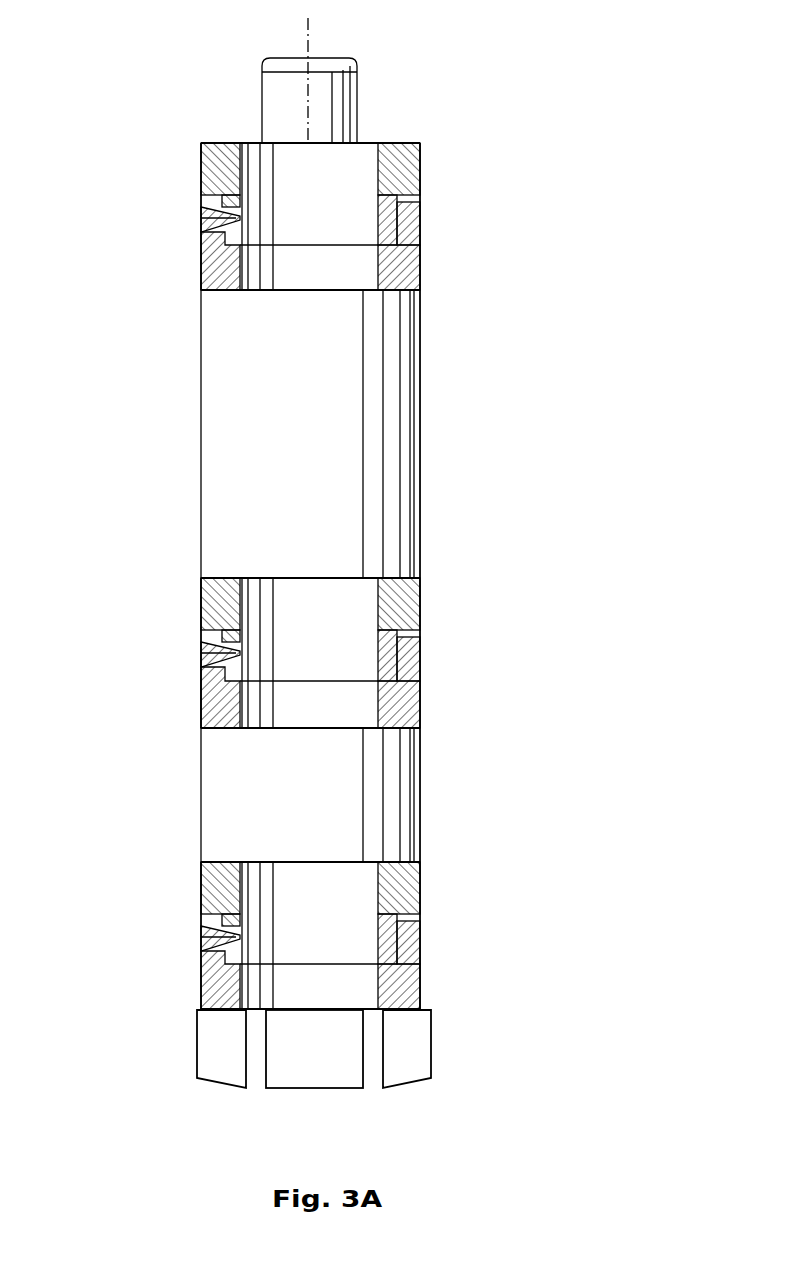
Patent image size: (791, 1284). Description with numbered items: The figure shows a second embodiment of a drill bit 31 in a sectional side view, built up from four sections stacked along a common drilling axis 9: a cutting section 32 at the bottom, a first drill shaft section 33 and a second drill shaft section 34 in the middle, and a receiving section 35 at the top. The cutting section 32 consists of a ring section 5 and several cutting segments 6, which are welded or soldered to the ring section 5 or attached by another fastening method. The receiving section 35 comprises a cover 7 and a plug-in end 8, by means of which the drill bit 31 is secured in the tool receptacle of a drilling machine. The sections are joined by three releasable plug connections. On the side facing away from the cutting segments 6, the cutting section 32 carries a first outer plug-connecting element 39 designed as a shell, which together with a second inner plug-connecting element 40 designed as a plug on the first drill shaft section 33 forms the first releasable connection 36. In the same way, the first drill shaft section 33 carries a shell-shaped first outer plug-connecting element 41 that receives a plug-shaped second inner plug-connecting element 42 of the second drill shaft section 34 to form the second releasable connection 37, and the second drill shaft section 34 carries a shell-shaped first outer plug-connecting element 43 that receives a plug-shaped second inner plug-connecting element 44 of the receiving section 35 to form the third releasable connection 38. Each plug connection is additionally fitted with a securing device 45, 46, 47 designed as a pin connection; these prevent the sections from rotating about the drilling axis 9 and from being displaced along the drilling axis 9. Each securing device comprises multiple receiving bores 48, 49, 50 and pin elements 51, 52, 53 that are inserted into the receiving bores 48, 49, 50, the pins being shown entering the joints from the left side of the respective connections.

The ring section 5 is at (410, 982).
The cutting segments 6 is at (221, 1063).
The cover 7 is at (410, 158).
The plug-in end 8 is at (285, 103).
The drilling axis 9 is at (305, 45).
The drill bit 31 is at (411, 100).
The cutting section 32 is at (560, 968).
The first drill shaft section 33 is at (407, 700).
The second drill shaft section 34 is at (407, 268).
The receiving section 35 is at (556, 190).
The first releasable connection 36 is at (142, 878).
The second releasable connection 37 is at (142, 603).
The third releasable connection 38 is at (140, 171).
The first outer plug-connecting element 39 is at (412, 933).
The second inner plug-connecting element 40 is at (380, 941).
The first outer plug-connecting element 41 is at (410, 650).
The second inner plug-connecting element 42 is at (378, 656).
The first outer plug-connecting element 43 is at (410, 215).
The second inner plug-connecting element 44 is at (378, 222).
The securing device 45 is at (188, 955).
The securing device 46 is at (190, 671).
The securing device 47 is at (186, 237).
The receiving bores 48 is at (242, 920).
The receiving bores 49 is at (240, 635).
The receiving bores 50 is at (237, 204).
The pin elements 51 is at (200, 932).
The pin elements 52 is at (200, 649).
The pin elements 53 is at (200, 214).